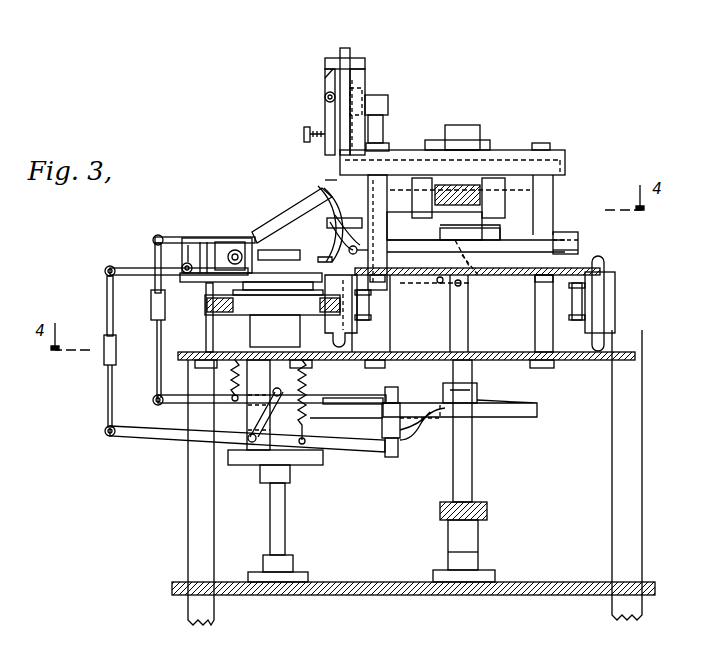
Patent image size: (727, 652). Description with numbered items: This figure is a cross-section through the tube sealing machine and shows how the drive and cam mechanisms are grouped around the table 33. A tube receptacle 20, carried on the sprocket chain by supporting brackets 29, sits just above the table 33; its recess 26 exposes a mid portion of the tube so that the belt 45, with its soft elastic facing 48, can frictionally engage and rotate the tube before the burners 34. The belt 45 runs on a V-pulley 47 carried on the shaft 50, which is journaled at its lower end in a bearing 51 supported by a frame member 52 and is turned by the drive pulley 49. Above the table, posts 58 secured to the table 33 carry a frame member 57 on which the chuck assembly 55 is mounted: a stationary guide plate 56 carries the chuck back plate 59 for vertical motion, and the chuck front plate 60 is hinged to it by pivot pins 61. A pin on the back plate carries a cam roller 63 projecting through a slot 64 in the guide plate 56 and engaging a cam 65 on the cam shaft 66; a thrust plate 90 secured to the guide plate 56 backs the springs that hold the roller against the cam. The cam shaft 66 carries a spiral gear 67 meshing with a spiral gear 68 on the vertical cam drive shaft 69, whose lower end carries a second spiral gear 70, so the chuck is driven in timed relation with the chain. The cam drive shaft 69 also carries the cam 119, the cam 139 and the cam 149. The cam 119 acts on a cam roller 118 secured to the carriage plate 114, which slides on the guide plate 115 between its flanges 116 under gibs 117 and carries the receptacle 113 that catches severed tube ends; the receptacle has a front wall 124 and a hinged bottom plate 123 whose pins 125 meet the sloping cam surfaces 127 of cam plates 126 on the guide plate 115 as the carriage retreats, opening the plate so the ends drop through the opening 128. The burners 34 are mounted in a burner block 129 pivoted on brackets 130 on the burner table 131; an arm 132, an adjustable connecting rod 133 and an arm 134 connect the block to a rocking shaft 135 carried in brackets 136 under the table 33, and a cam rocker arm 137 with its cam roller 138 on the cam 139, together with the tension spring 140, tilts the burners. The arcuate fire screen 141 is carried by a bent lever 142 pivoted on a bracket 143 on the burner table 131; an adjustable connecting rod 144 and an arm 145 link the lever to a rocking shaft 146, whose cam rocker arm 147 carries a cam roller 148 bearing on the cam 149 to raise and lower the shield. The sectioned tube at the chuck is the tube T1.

The tube receptacle 20 is at (605, 300).
The recess 26 is at (355, 318).
The supporting bracket 29 is at (572, 290).
The table 33 is at (518, 352).
The burner 34 is at (275, 228).
The belt 45 is at (235, 310).
The V-pulley 47 is at (255, 322).
The facing 48 is at (207, 312).
The drive pulley 49 is at (310, 465).
The shaft 50 is at (270, 518).
The bearing 51 is at (300, 572).
The frame member 52 is at (380, 582).
The chuck assembly 55 is at (374, 76).
The stationary guide plate 56 is at (378, 124).
The frame member 57 is at (568, 150).
The post 58 is at (548, 326).
The chuck back plate 59 is at (305, 127).
The chuck front plate 60 is at (325, 157).
The pivot pin 61 is at (325, 96).
The cam roller 63 is at (388, 102).
The slot 64 is at (365, 90).
The cam 65 is at (377, 140).
The cam shaft 66 is at (476, 232).
The spiral gear 67 is at (482, 140).
The spiral gear 68 is at (480, 195).
The cam drive shaft 69 is at (486, 295).
The second spiral gear 70 is at (485, 502).
The thrust plate 90 is at (351, 58).
The receptacle 113 is at (352, 218).
The carriage plate 114 is at (384, 305).
The guide plate 115 is at (578, 252).
The flange 116 is at (578, 240).
The gib 117 is at (566, 232).
The cam roller 118 is at (485, 236).
The cam 119 is at (452, 290).
The bottom plate 123 is at (320, 227).
The front wall 124 is at (285, 255).
The pin 125 is at (340, 222).
The cam plate 126 is at (460, 262).
The cam surface 127 is at (430, 280).
The opening 128 is at (487, 311).
The burner block 129 is at (222, 242).
The bracket 130 is at (236, 242).
The burner table 131 is at (185, 282).
The arm 132 is at (170, 237).
The adjustable connecting rod 133 is at (156, 378).
The arm 134 is at (160, 404).
The rocking shaft 135 is at (306, 380).
The bracket 136 is at (235, 393).
The cam rocker arm 137 is at (328, 400).
The cam roller 138 is at (395, 387).
The cam 139 is at (497, 403).
The tension spring 140 is at (330, 420).
The fire screen 141 is at (325, 180).
The bent lever 142 is at (118, 268).
The bracket 143 is at (190, 262).
The adjustable connecting rod 144 is at (107, 287).
The arm 145 is at (155, 440).
The rocking shaft 146 is at (250, 445).
The cam rocker arm 147 is at (345, 452).
The cam roller 148 is at (391, 457).
The cam 149 is at (410, 432).
The table T1 is at (400, 336).